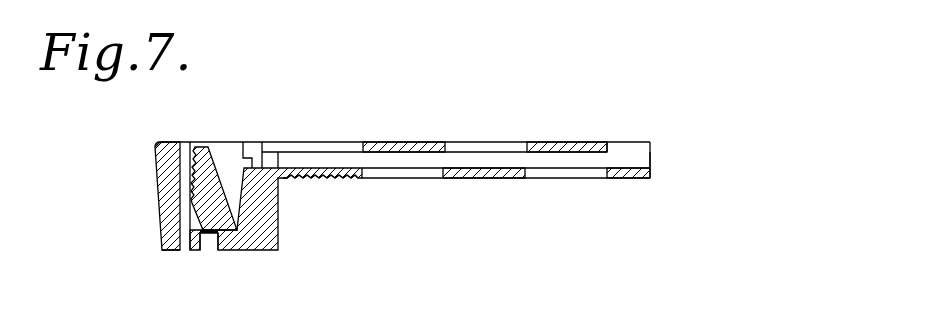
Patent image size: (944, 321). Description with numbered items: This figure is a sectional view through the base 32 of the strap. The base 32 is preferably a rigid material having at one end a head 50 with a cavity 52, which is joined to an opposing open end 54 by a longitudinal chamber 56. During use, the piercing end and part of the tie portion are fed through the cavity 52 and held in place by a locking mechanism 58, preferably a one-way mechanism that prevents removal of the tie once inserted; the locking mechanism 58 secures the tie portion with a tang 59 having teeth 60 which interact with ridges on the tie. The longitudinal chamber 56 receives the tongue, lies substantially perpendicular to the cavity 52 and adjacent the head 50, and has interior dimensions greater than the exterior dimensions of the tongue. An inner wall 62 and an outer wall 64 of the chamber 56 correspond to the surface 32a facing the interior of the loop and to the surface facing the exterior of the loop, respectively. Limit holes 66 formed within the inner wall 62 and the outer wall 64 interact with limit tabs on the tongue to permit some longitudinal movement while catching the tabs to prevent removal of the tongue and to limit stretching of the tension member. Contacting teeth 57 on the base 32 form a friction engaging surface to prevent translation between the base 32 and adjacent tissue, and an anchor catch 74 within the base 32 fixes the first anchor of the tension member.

The base 32 is at (138, 143).
The surface facing the interior of the loop 32a is at (627, 177).
The head 50 is at (279, 235).
The cavity 52 is at (177, 228).
The open end 54 is at (650, 155).
The longitudinal chamber 56 is at (433, 160).
The contacting teeth 57 is at (318, 178).
The locking mechanism 58 is at (200, 233).
The tang 59 is at (203, 148).
The teeth 60 is at (194, 184).
The inner wall 62 is at (507, 177).
The outer wall 64 is at (570, 147).
The limit holes 66 is at (475, 148).
The anchor catch 74 is at (256, 157).